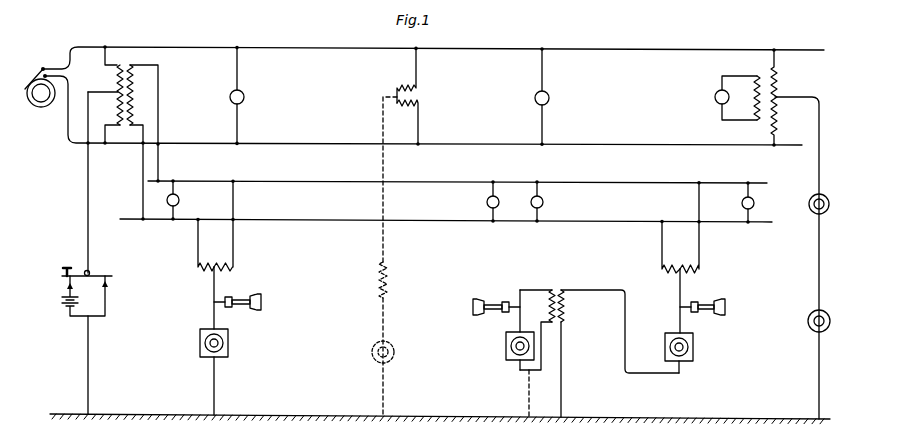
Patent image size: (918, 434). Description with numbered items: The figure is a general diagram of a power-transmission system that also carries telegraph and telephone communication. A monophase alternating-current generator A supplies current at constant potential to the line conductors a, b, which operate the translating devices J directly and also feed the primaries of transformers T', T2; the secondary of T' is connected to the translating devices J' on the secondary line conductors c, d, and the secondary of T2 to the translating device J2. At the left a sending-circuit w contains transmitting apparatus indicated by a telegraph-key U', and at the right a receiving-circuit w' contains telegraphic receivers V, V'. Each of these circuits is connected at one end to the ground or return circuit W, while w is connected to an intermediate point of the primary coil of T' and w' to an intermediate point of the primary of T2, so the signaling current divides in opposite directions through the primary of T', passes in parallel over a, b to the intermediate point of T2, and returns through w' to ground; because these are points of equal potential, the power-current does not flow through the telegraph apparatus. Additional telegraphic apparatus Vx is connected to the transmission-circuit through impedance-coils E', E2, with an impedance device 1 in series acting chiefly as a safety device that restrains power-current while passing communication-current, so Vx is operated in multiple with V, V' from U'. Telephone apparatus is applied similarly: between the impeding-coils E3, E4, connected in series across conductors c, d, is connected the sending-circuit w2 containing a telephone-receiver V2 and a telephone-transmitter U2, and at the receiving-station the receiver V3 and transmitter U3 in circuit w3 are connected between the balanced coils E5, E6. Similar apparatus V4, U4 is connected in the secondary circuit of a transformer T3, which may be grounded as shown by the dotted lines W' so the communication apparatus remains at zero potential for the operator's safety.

The alternating-current generator A is at (36, 87).
The transformer T' is at (124, 133).
The translating devices J is at (392, 96).
The impedance-coil E' is at (405, 75).
The impedance-coil E2 is at (406, 123).
The translating device J2 is at (726, 98).
The transformer T2 is at (763, 97).
The line conductor a is at (433, 49).
The line conductor b is at (423, 110).
The secondary line conductor c is at (457, 174).
The secondary line conductor d is at (446, 212).
The sending-circuit w is at (76, 253).
The receiving-circuit w' is at (807, 258).
The translating devices J' is at (466, 201).
The telegraphic receiver V is at (810, 204).
The telegraphic receiver V' is at (811, 321).
The telegraph-key U' is at (75, 292).
The impeding-coil E3 is at (198, 255).
The impeding-coil E4 is at (225, 236).
The sending-circuit w2 is at (200, 298).
The telephone-receiver V2 is at (248, 302).
The telephone-transmitter U2 is at (226, 372).
The impedance coil or device 1 is at (377, 256).
The additional telegraphic apparatus Vx is at (392, 352).
The telephone-receiver V4 is at (490, 304).
The transformer T3 is at (599, 343).
The telephone-transmitter U4 is at (508, 330).
The ground connection W' is at (515, 393).
The impeding-coil E5 is at (666, 257).
The impeding-coil E6 is at (697, 232).
The receiving-circuit w3 is at (690, 301).
The telephone-receiver V3 is at (712, 306).
The telephone-transmitter U3 is at (689, 353).
The ground or return circuit W is at (440, 410).